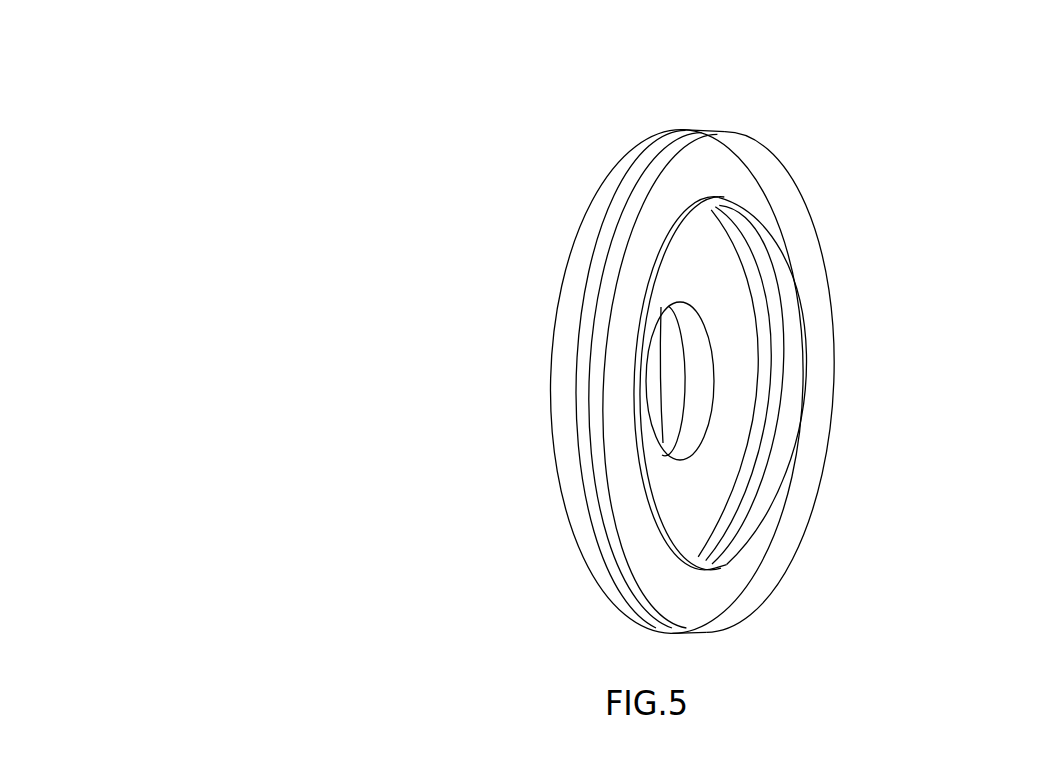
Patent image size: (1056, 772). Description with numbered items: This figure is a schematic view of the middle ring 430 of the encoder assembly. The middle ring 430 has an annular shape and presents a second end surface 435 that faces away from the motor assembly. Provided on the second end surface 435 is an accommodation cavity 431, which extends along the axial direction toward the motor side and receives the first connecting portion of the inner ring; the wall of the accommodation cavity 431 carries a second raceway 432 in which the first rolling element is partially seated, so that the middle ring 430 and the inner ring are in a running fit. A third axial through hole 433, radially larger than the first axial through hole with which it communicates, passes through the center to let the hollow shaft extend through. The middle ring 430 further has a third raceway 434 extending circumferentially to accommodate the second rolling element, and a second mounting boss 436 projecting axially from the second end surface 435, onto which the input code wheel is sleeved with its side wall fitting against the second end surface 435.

The middle ring 430 is at (202, 178).
The accommodation cavity 431 is at (742, 323).
The second raceway 432 is at (773, 432).
The third axial through hole 433 is at (662, 368).
The third raceway 434 is at (602, 243).
The second end surface 435 is at (787, 205).
The second mounting boss 436 is at (775, 515).